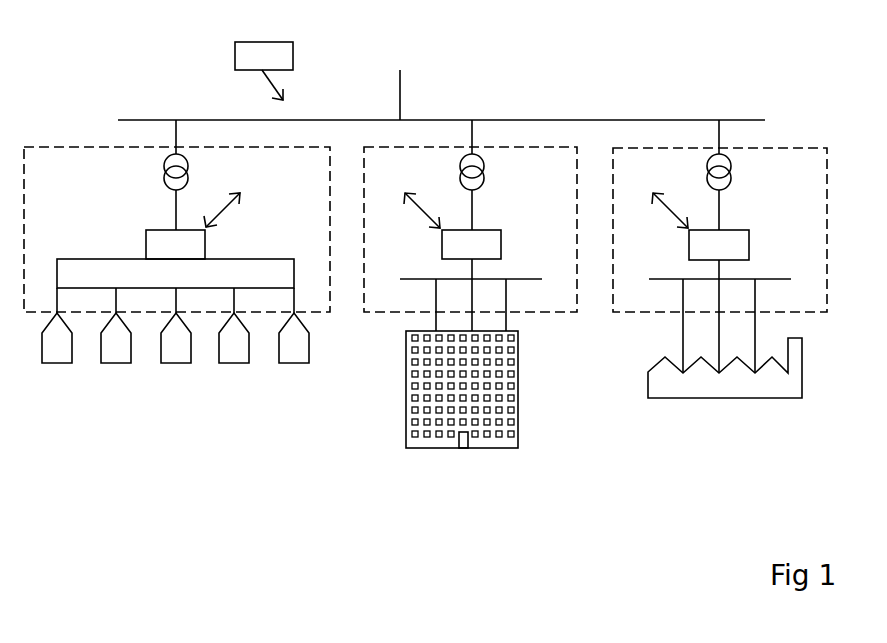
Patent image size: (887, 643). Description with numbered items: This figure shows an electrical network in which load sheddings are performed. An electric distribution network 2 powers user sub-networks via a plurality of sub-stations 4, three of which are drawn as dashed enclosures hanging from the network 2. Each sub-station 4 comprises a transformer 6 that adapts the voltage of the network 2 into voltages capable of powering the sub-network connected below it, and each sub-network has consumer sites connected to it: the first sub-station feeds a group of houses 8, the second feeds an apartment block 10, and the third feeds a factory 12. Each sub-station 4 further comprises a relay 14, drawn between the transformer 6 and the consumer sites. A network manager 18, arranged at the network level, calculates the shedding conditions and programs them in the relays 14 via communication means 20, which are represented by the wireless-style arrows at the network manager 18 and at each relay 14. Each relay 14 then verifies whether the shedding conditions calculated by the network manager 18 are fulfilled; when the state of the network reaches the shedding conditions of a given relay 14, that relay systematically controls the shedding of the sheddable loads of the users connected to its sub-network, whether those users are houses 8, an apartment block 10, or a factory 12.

The electric distribution network 2 is at (406, 84).
The sub-station 4 is at (334, 181).
The transformer 6 is at (191, 172).
The houses 8 is at (60, 366).
The apartment blocks 10 is at (522, 423).
The factories 12 is at (745, 401).
The relay 14 is at (145, 228).
The network manager 18 is at (264, 56).
The communication means 20 is at (264, 85).